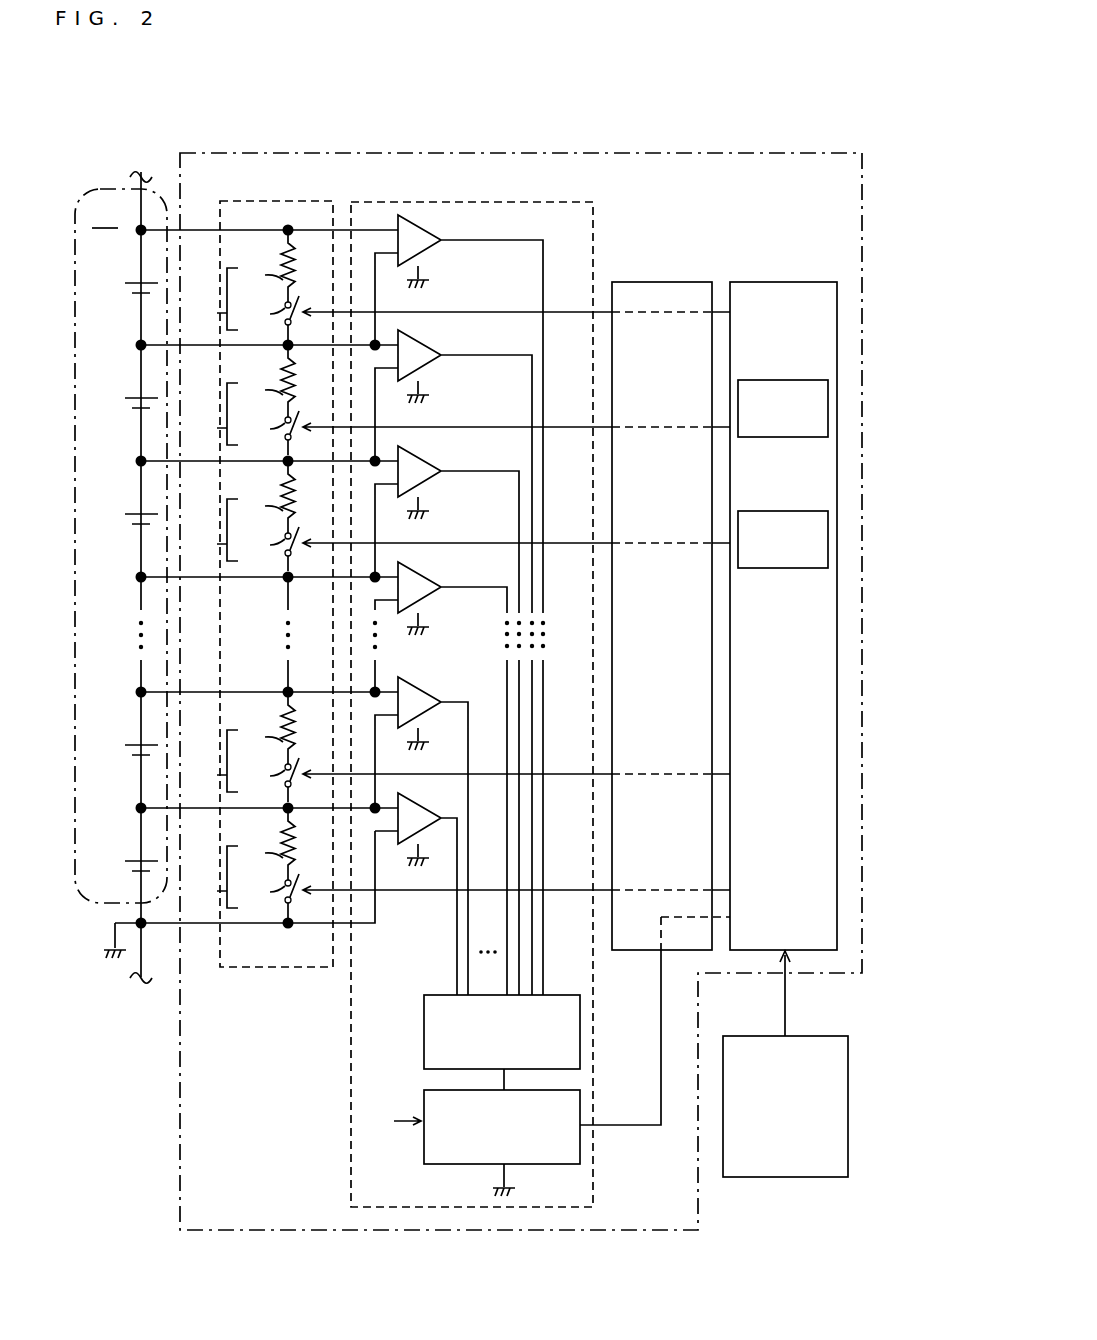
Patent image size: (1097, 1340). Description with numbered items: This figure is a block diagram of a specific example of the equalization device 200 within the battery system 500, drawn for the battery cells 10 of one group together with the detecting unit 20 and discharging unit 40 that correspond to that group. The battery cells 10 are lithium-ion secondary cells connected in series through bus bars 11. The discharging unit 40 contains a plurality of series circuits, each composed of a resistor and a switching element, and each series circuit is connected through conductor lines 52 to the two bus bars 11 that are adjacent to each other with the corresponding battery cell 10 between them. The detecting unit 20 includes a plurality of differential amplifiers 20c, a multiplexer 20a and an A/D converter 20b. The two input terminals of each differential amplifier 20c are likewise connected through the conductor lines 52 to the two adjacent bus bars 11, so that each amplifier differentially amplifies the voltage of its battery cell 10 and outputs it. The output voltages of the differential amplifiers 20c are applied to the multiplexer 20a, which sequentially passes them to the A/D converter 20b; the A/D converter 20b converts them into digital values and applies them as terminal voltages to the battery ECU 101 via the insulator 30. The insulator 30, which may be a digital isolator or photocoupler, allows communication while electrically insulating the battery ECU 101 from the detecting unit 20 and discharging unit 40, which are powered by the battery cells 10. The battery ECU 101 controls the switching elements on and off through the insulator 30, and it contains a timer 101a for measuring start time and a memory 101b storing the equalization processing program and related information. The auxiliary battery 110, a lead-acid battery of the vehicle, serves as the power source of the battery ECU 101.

The battery system 500 is at (796, 113).
The equalization device 200 is at (557, 152).
The bus bar 11 is at (141, 205).
The battery cell 10 is at (132, 281).
The discharging unit 40 is at (270, 200).
The conductor line 52 is at (243, 233).
The detecting unit 20 is at (424, 200).
The differential amplifier 20c is at (424, 229).
The multiplexer 20a is at (424, 1033).
The A/D converter 20b is at (424, 1104).
The insulator 30 is at (667, 281).
The battery ECU 101 is at (804, 281).
The timer 101a is at (775, 380).
The memory 101b is at (775, 511).
The auxiliary battery 110 is at (824, 1036).